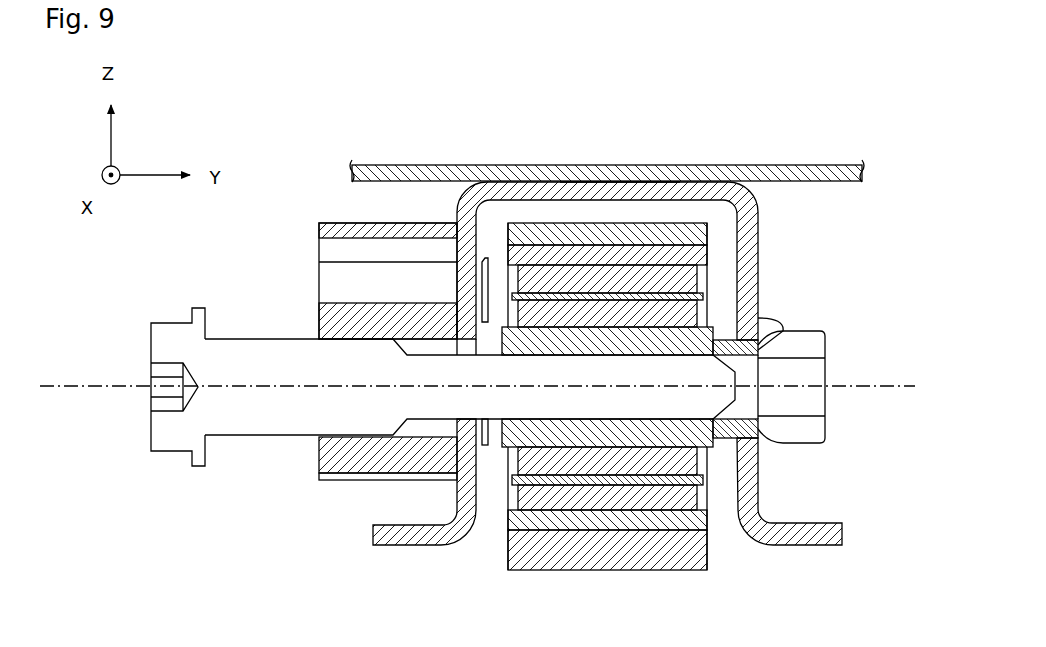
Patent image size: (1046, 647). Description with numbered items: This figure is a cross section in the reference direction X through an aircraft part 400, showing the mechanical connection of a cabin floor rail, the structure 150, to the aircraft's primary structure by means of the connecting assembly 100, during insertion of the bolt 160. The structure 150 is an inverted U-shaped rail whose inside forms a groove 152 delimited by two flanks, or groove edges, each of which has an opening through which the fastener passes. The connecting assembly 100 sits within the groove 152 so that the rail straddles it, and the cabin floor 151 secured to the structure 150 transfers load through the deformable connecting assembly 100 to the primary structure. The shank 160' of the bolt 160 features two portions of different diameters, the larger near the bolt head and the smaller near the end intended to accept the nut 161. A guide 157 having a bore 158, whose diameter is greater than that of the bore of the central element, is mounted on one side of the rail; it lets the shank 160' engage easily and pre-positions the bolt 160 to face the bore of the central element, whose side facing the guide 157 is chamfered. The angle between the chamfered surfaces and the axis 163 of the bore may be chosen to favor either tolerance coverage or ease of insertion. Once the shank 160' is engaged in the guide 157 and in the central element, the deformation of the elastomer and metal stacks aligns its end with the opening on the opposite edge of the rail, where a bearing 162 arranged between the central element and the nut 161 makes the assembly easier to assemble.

The connecting assembly 100 is at (605, 592).
The structure 150 is at (677, 166).
The cabin floor 151 is at (607, 166).
The groove 152 is at (507, 227).
The guide 157 is at (366, 316).
The bore 158 is at (334, 465).
The bolt 160 is at (165, 361).
The shank 160' is at (470, 351).
The nut 161 is at (822, 338).
The bearing 162 is at (785, 326).
The axis 163 is at (900, 386).
The aircraft part 400 is at (815, 122).